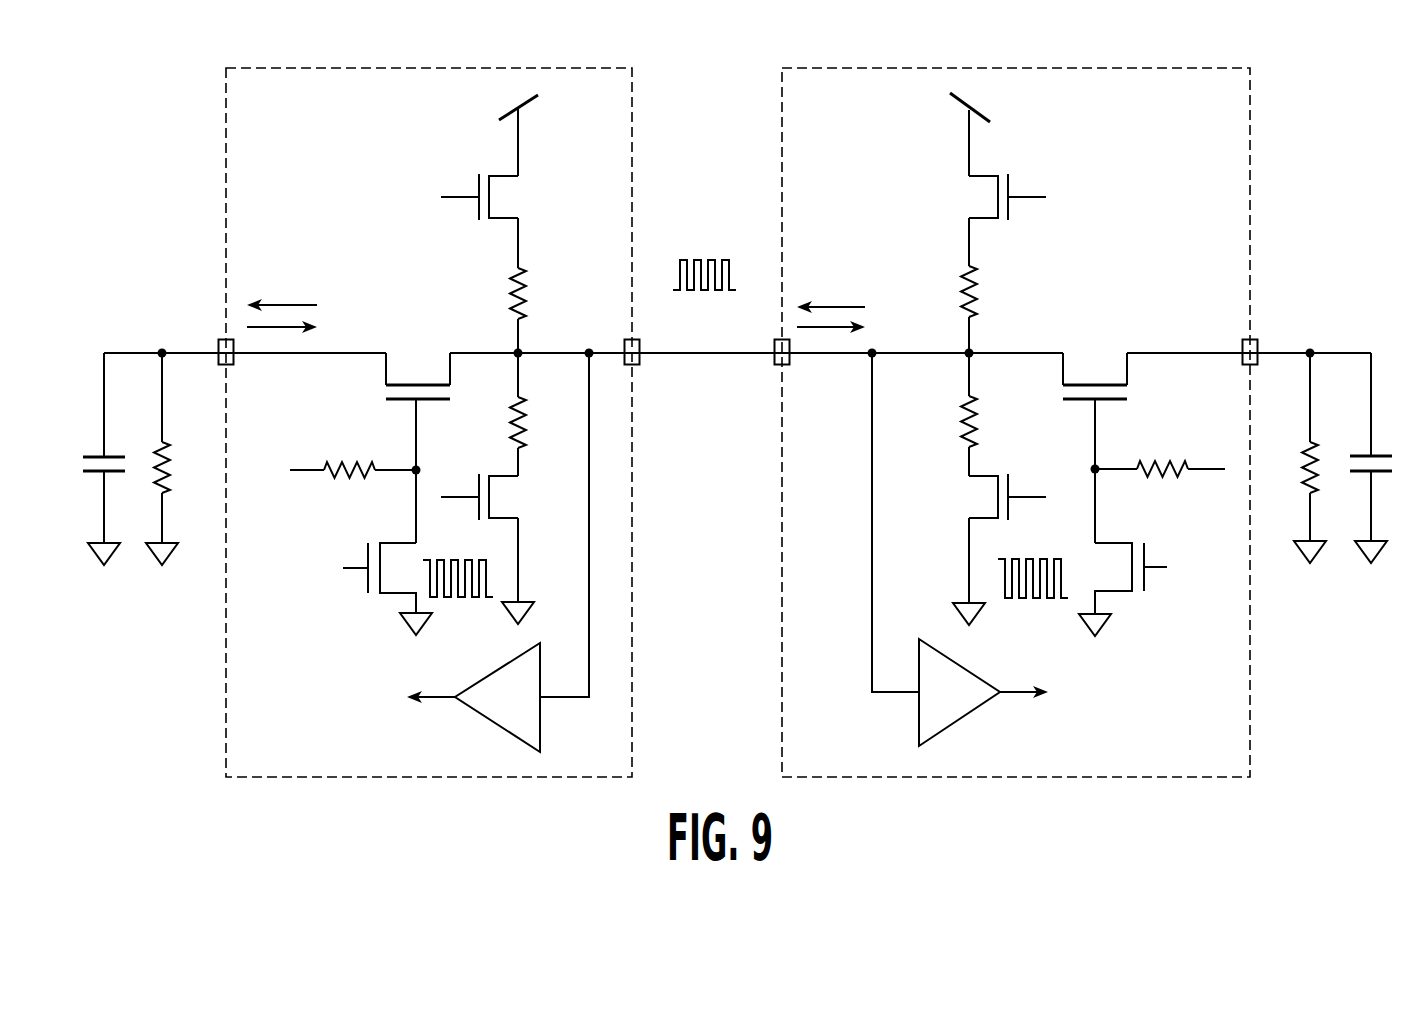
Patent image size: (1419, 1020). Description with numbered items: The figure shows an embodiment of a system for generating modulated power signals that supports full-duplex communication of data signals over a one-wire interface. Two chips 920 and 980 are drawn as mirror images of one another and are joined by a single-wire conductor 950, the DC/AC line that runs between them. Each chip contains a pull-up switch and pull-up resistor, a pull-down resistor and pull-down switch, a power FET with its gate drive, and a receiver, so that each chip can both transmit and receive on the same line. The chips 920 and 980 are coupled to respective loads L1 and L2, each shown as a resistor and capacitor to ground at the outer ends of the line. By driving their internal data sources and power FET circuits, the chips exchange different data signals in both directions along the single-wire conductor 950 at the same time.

The chip 920 is at (632, 148).
The single-wire conductor 950 is at (680, 355).
The chip 980 is at (1250, 160).
The load L1 is at (1385, 325).
The load L2 is at (98, 324).